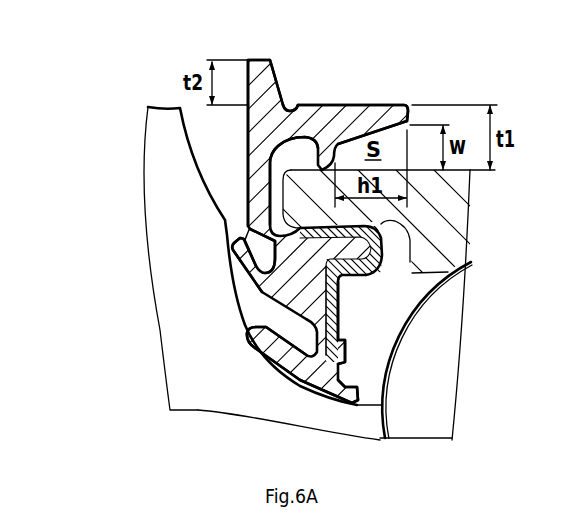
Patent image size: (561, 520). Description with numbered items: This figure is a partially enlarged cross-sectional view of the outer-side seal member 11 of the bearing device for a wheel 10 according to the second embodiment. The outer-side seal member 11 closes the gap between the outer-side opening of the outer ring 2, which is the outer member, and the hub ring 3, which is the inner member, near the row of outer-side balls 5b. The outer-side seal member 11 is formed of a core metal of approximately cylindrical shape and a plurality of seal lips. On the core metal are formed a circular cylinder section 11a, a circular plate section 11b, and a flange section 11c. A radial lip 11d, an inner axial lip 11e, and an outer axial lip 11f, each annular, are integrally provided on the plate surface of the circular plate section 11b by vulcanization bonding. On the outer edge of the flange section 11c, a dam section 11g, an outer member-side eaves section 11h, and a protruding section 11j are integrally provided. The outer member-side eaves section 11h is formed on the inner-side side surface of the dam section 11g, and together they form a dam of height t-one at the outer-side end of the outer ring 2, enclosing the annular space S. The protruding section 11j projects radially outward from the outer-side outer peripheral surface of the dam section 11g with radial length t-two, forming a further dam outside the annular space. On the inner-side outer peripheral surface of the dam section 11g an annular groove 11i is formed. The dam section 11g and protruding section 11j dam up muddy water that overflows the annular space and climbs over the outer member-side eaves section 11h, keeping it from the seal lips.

The bearing device for a wheel 10 is at (50, 24).
The outer-side seal member 11 is at (242, 57).
The protruding section 11j is at (258, 64).
The groove 11i is at (291, 107).
The outer member-side eaves section 11h is at (364, 110).
The dam section 11g is at (267, 132).
The flange section 11c is at (270, 178).
The circular cylinder section 11a is at (235, 251).
The outer axial lip 11f is at (242, 255).
The circular plate section 11b is at (328, 301).
The inner axial lip 11e is at (250, 331).
The radial lip 11d is at (357, 405).
The outer ring 2 is at (468, 215).
The outer-side balls 5b is at (446, 404).
The hub ring 3 is at (198, 398).